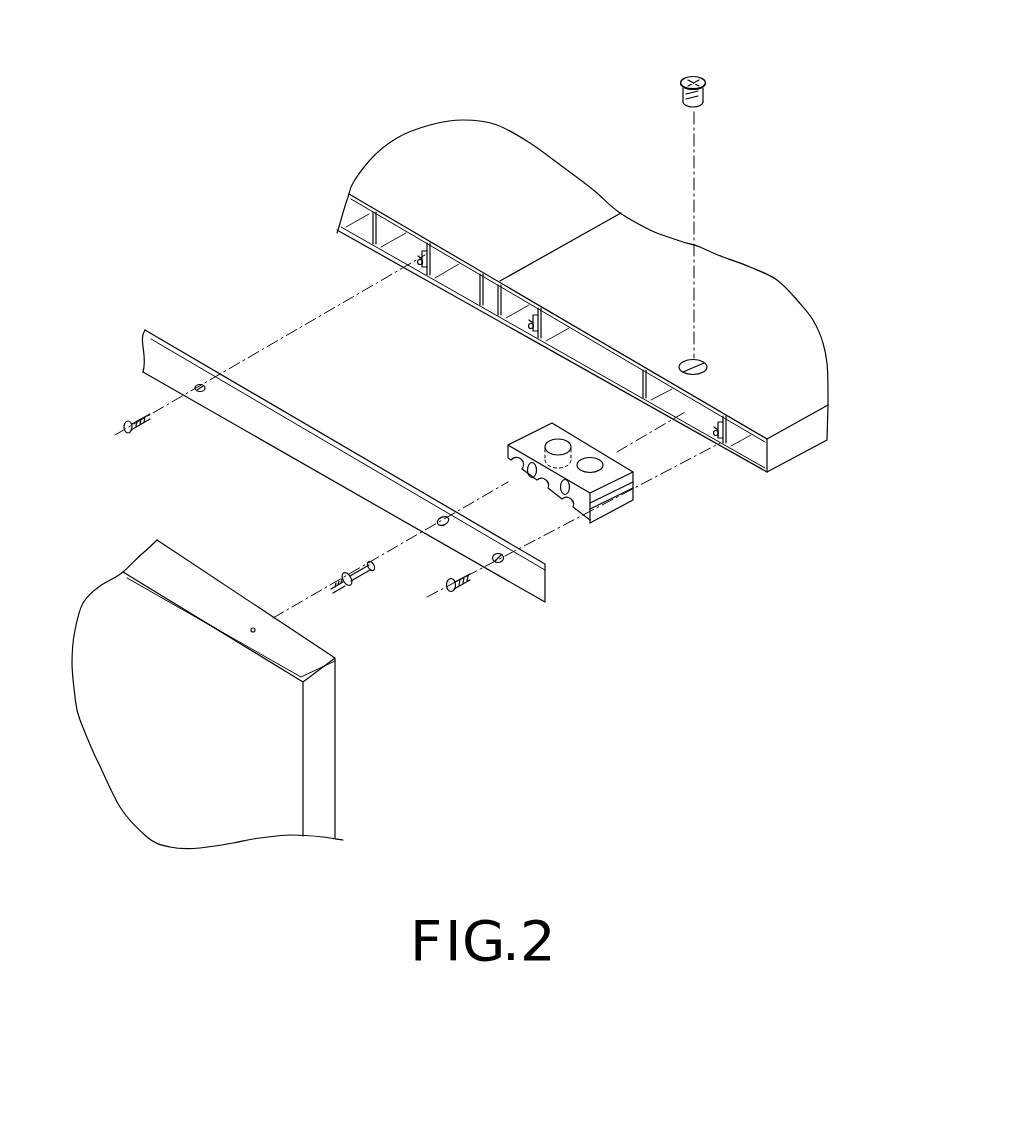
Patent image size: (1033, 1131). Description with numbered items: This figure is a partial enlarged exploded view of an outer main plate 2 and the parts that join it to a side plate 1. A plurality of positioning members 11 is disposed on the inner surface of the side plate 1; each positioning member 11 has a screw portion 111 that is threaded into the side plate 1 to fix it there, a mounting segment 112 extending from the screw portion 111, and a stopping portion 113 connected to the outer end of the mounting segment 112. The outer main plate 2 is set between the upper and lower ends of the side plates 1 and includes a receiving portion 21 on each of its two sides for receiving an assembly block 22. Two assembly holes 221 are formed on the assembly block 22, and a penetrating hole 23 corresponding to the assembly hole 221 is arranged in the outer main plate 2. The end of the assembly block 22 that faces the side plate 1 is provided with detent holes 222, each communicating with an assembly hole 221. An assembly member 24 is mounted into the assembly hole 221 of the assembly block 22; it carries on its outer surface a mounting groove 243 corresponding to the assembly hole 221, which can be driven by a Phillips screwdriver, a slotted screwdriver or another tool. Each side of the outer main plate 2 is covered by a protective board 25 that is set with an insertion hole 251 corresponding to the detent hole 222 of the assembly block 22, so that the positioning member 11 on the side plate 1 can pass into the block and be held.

The side plate 1 is at (323, 785).
The positioning member 11 is at (358, 581).
The screw portion 111 is at (337, 586).
The mounting segment 112 is at (358, 580).
The stopping portion 113 is at (395, 583).
The outer main plate 2 is at (582, 327).
The receiving portion 21 is at (708, 432).
The assembly block 22 is at (550, 462).
The assembly hole 221 is at (558, 446).
The detent hole 222 is at (528, 470).
The penetrating hole 23 is at (706, 363).
The assembly member 24 is at (701, 56).
The mounting groove 243 is at (691, 78).
The protective board 25 is at (349, 521).
The insertion hole 251 is at (443, 528).